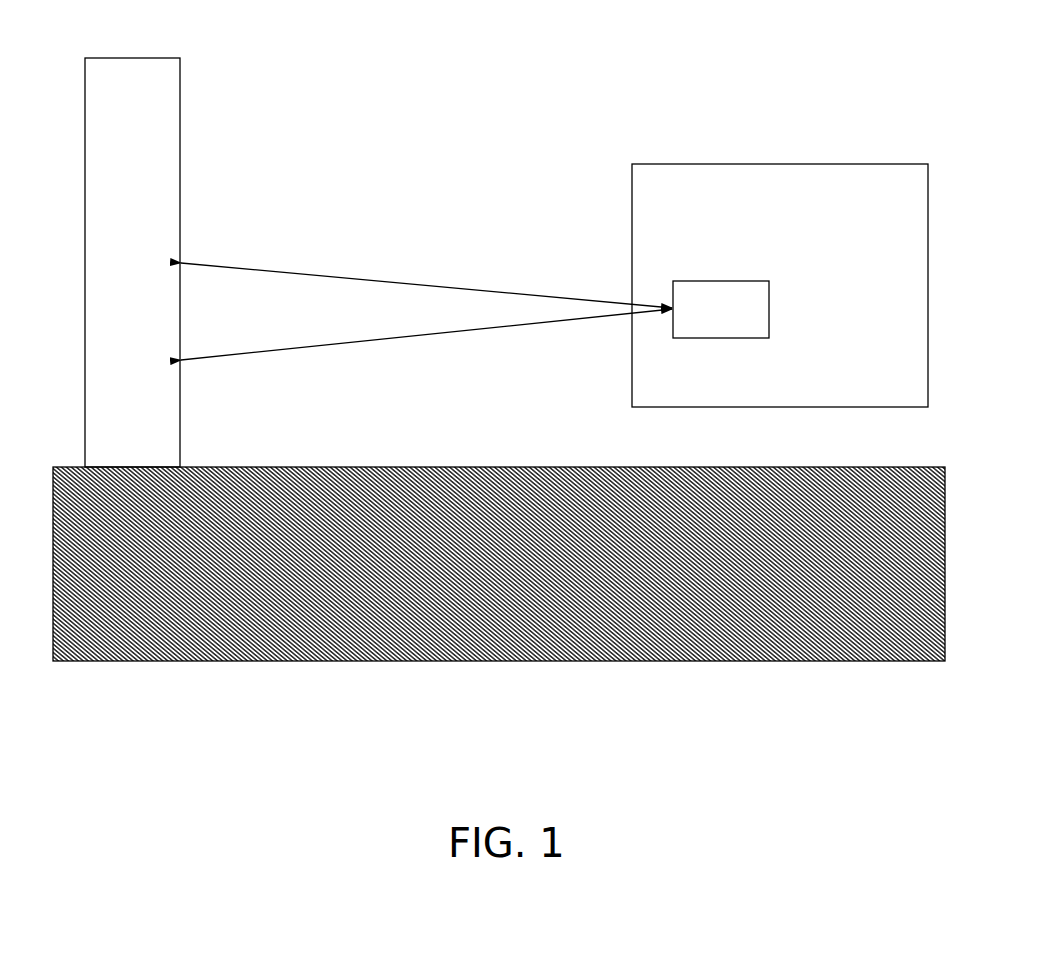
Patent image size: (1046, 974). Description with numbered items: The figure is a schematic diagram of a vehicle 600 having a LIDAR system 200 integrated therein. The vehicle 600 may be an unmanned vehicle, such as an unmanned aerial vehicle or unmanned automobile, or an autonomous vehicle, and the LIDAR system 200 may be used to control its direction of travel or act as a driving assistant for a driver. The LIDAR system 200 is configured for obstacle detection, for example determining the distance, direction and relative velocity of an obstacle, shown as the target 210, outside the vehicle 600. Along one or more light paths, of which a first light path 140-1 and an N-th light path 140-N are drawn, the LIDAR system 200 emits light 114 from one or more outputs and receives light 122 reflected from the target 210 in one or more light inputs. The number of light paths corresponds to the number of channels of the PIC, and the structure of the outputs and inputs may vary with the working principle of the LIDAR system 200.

The target 210 is at (181, 72).
The vehicle 600 is at (830, 167).
The LIDAR system 200 is at (721, 309).
The light 114 is at (426, 319).
The light 122 is at (426, 319).
The light path 140-1 is at (276, 270).
The light path 140-N is at (365, 344).